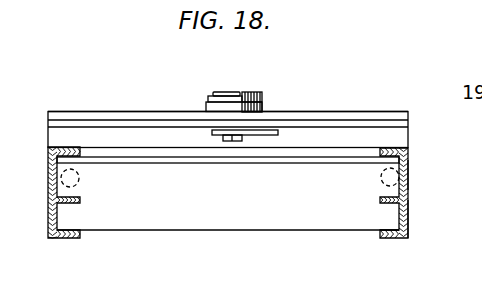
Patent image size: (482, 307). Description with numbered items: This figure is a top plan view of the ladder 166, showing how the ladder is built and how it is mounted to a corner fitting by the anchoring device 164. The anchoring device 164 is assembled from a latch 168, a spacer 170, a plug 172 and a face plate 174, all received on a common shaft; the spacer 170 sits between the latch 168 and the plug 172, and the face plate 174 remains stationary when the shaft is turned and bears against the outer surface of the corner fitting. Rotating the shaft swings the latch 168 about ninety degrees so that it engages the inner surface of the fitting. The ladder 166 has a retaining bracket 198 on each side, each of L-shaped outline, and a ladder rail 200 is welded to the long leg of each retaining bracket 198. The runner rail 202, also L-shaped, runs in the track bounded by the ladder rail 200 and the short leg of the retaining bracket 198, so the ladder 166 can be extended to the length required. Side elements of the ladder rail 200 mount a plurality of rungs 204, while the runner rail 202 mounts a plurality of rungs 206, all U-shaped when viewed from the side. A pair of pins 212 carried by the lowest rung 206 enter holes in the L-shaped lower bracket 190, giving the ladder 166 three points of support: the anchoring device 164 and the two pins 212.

The anchoring device 164 is at (332, 103).
The ladder 166 is at (412, 223).
The latch 168 is at (258, 92).
The spacer 170 is at (258, 102).
The plug 172 is at (208, 107).
The face plate 174 is at (372, 118).
The lower bracket 190 is at (65, 137).
The retaining bracket 198 is at (50, 213).
The ladder rail 200 is at (393, 219).
The runner rail 202 is at (409, 175).
The rungs 204 is at (285, 220).
The rungs 206 is at (198, 183).
The pins 212 is at (79, 182).